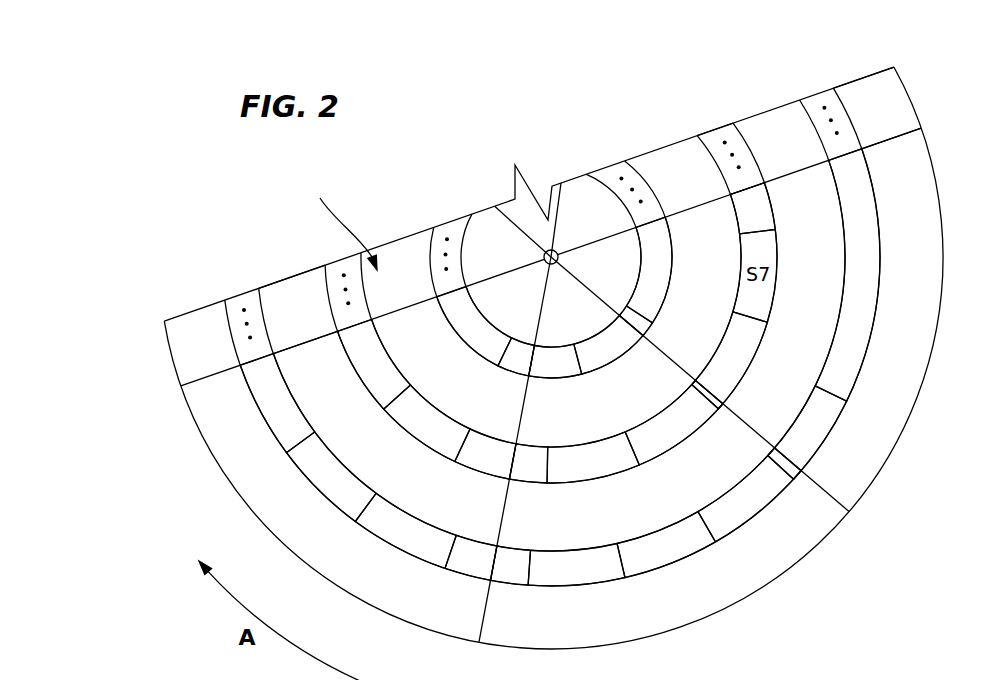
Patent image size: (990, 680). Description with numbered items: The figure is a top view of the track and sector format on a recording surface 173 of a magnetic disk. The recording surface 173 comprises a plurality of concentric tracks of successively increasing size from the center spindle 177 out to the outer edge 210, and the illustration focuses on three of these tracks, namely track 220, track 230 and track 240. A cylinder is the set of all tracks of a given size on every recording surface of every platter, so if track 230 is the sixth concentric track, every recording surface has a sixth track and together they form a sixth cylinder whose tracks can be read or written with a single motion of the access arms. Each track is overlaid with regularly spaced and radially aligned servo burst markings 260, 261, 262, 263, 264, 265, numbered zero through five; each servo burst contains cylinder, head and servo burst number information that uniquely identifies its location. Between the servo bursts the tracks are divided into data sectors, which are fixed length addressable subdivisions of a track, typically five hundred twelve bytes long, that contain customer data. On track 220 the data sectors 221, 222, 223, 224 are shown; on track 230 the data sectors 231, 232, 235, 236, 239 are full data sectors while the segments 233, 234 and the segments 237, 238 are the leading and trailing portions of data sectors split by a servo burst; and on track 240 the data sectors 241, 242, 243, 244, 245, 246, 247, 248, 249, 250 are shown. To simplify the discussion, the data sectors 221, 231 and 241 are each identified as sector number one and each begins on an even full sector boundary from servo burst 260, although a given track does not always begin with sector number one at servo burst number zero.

The recording surface 173 is at (333, 221).
The center spindle 177 is at (543, 257).
The outer edge 210 is at (922, 398).
The track 220 is at (668, 243).
The data sector 221 is at (451, 333).
The data sector 222 is at (505, 376).
The data sector 223 is at (551, 378).
The data sector 224 is at (626, 358).
The track 230 is at (750, 147).
The data sector 231 is at (362, 386).
The data sector 232 is at (401, 434).
The first data sector segment 233 is at (489, 484).
The second data sector segment 234 is at (530, 489).
The data sector 235 is at (604, 482).
The data sector 236 is at (668, 459).
The first data sector segment 237 is at (721, 414).
The second data sector segment 238 is at (760, 366).
The data sector 239 is at (780, 245).
The track 240 is at (885, 258).
The data sector 241 is at (257, 396).
The data sector 242 is at (322, 493).
The data sector 243 is at (392, 550).
The data sector 244 is at (456, 574).
The data sector 245 is at (504, 588).
The data sector 246 is at (577, 590).
The data sector 247 is at (666, 563).
The data sector 248 is at (742, 530).
The data sector 249 is at (797, 480).
The data sector 250 is at (832, 436).
The servo burst marking 260 is at (307, 340).
The servo burst marking 261 is at (480, 630).
The servo burst marking 262 is at (840, 497).
The servo burst marking 263 is at (890, 147).
The servo burst marking 264 is at (567, 186).
The servo burst marking 265 is at (512, 212).